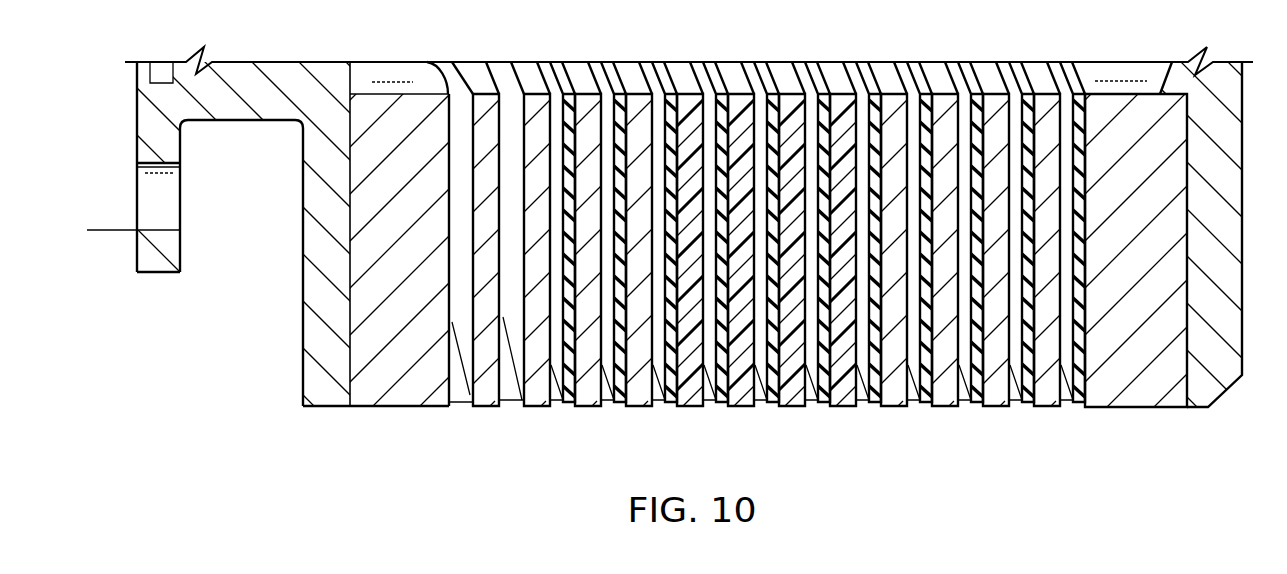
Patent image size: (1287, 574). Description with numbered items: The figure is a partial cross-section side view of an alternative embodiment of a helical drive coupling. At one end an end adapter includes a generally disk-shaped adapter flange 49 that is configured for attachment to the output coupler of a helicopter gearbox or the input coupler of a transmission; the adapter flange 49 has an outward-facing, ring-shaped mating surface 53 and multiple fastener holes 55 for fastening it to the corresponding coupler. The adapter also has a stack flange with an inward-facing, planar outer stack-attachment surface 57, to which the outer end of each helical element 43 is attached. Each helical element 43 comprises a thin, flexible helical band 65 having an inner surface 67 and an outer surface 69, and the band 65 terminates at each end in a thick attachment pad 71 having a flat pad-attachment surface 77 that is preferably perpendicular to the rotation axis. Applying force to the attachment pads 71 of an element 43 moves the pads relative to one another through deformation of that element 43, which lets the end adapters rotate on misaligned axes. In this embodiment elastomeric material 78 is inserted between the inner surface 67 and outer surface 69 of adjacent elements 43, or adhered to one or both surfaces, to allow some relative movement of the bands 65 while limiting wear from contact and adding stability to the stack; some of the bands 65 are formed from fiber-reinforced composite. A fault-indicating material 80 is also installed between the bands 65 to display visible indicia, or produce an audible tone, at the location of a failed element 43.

The helical element 43 is at (690, 414).
The adapter flange 49 is at (134, 138).
The mating surface 53 is at (137, 257).
The fastener holes 55 is at (152, 226).
The outer stack-attachment surface 57 is at (366, 384).
The helical band 65 is at (997, 408).
The inner surface 67 is at (502, 402).
The outer surface 69 is at (470, 390).
The attachment pad 71 is at (1133, 397).
The pad-attachment surface 77 is at (350, 238).
The elastomeric material 78 is at (826, 404).
The fault-indicating material 80 is at (876, 404).